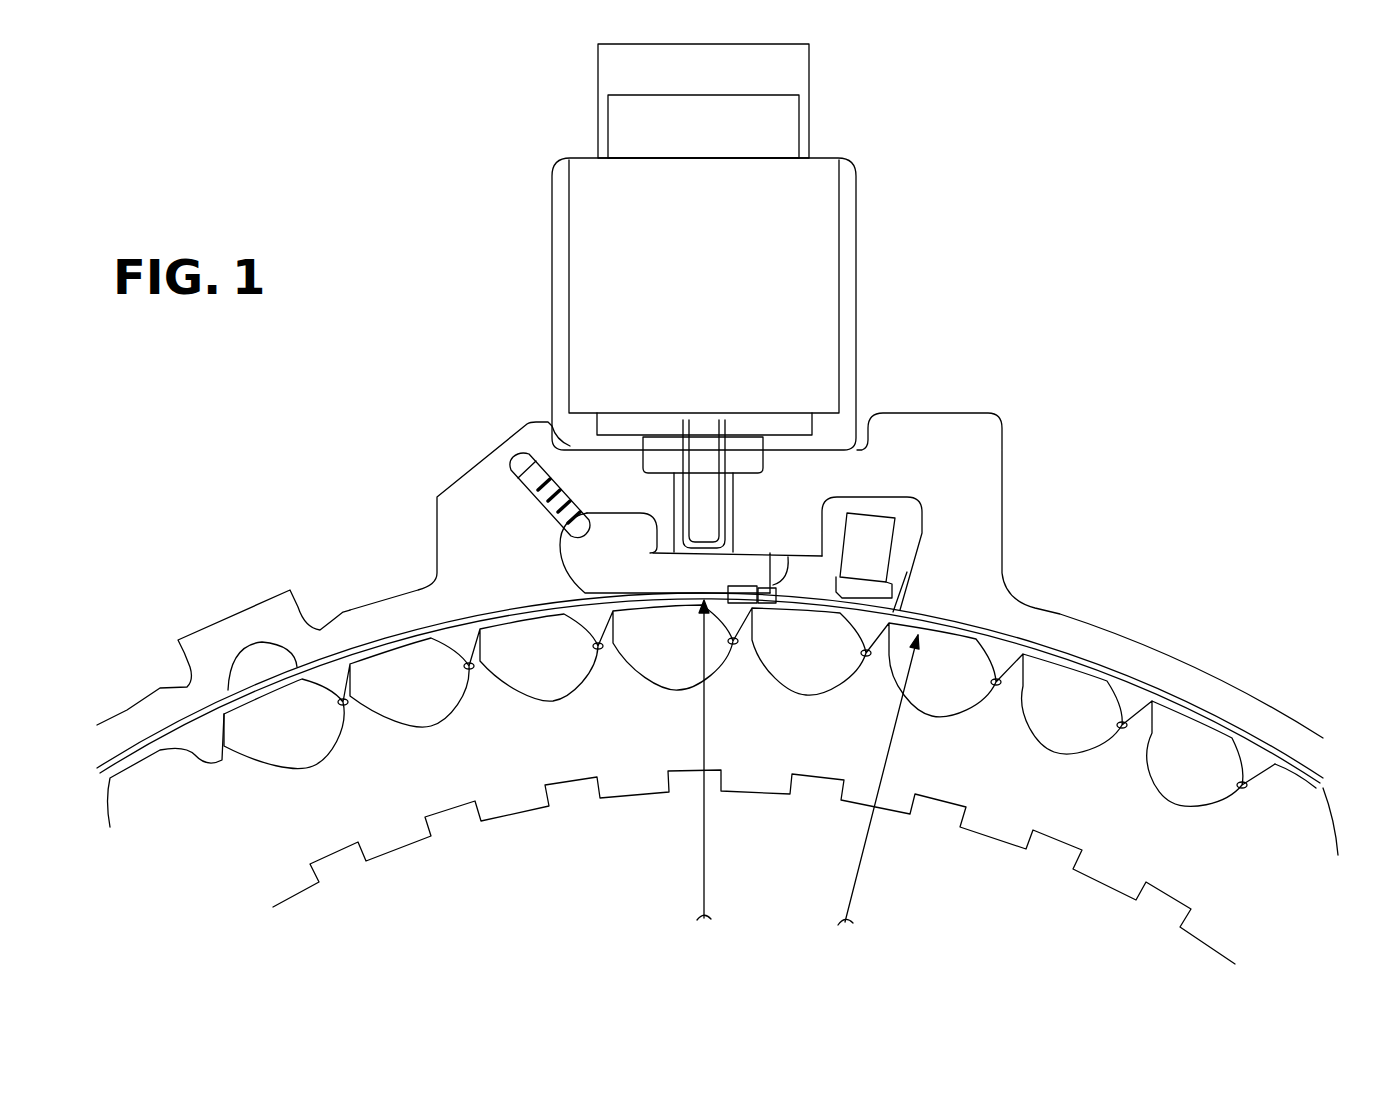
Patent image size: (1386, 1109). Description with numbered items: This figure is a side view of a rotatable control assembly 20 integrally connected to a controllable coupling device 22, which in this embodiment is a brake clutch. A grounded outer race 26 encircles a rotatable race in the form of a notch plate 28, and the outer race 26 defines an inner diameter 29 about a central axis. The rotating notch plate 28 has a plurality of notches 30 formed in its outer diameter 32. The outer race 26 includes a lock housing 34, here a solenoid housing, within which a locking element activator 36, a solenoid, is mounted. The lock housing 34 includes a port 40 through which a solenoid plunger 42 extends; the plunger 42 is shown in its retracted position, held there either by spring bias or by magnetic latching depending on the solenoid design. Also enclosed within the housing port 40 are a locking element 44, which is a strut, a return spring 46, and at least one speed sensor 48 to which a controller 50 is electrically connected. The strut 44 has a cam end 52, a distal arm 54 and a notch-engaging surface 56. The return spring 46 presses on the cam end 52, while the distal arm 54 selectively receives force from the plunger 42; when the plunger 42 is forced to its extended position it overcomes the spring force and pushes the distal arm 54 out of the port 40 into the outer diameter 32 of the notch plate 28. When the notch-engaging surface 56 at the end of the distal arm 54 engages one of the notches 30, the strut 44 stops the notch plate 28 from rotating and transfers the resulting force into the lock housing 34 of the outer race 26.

The rotatable control assembly 20 is at (440, 383).
The controllable coupling device 22 is at (373, 602).
The grounded outer race 26 is at (123, 710).
The notch plate 28 is at (510, 808).
The inner diameter 29 is at (706, 871).
The notches 30 is at (580, 690).
The outer diameter 32 is at (896, 725).
The lock housing 34 is at (1007, 477).
The locking element activator 36 is at (842, 243).
The port 40 is at (737, 508).
The solenoid plunger 42 is at (727, 488).
The locking element 44 is at (730, 600).
The return spring 46 is at (535, 486).
The speed sensor 48 is at (895, 598).
The controller 50 is at (893, 545).
The cam end 52 is at (562, 551).
The distal arm 54 is at (762, 603).
The notch-engaging surface 56 is at (788, 556).